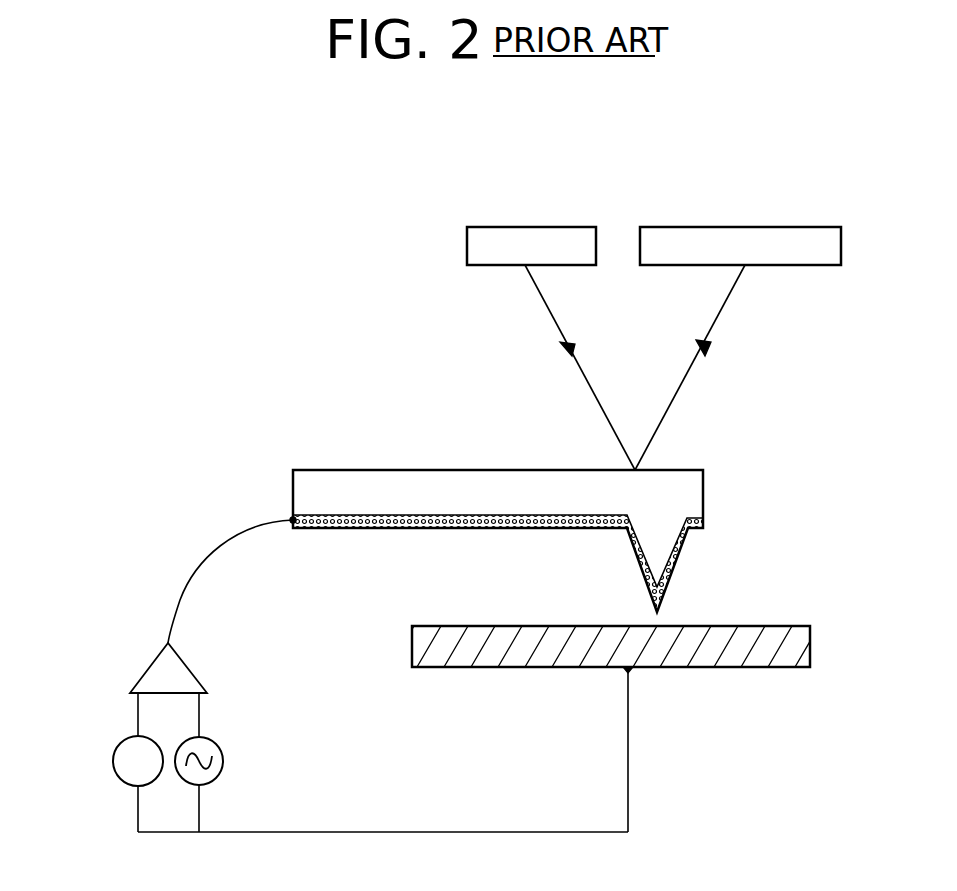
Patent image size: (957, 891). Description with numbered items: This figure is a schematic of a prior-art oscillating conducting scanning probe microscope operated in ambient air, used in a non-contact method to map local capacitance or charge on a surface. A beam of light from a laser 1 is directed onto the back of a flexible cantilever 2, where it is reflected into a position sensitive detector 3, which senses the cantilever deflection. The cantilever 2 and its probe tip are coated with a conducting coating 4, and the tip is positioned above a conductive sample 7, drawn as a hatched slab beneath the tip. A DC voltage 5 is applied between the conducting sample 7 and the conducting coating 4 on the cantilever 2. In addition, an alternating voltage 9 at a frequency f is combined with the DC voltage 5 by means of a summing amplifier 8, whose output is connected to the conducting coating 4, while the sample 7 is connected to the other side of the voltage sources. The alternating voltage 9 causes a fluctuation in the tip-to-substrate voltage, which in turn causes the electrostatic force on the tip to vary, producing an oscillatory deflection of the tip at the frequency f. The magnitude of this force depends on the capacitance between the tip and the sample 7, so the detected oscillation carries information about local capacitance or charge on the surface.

The laser 1 is at (467, 245).
The cantilever 2 is at (388, 480).
The position sensitive detector 3 is at (783, 227).
The conducting coating 4 is at (670, 575).
The DC voltage 5 is at (116, 761).
The conductive sample 7 is at (748, 667).
The summing amplifier 8 is at (192, 682).
The alternating voltage 9 is at (220, 770).
The frequency f is at (218, 752).